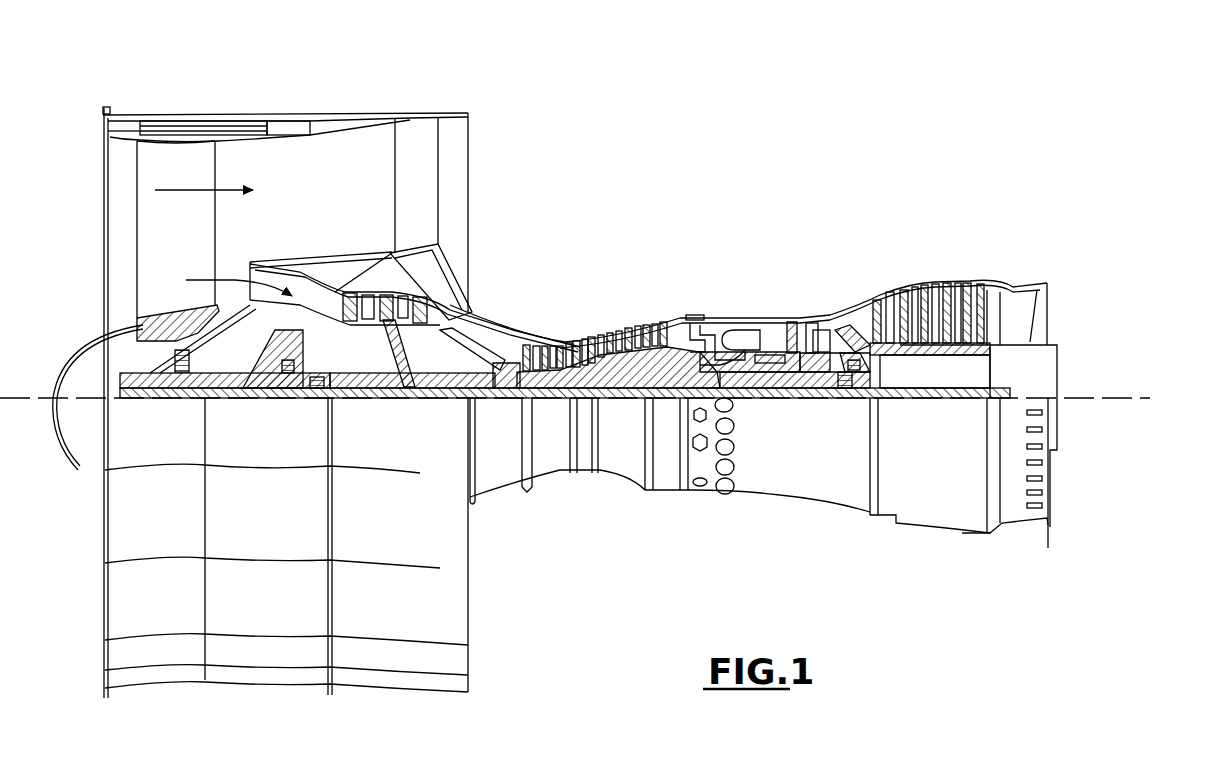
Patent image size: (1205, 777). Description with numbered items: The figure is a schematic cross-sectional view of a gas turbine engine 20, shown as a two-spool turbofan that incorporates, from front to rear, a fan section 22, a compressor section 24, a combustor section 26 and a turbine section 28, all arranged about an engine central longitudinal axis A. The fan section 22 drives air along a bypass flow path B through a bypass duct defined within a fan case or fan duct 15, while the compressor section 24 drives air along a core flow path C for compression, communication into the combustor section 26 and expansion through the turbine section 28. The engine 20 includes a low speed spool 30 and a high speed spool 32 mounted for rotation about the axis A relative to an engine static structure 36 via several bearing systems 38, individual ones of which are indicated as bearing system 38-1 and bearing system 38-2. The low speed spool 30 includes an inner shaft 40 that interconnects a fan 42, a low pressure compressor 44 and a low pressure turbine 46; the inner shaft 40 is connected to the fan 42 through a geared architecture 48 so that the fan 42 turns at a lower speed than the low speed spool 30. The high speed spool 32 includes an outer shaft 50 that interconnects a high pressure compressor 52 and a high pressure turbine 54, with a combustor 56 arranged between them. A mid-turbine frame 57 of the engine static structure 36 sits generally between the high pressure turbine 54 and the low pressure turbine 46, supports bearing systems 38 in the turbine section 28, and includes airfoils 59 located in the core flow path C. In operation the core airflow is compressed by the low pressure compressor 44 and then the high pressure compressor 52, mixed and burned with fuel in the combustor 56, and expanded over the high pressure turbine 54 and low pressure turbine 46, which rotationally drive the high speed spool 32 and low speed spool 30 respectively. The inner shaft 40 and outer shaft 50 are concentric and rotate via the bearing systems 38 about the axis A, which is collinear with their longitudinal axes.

The gas turbine engine 20 is at (750, 160).
The fan section 22 is at (215, 106).
The fan case or fan duct 15 is at (286, 118).
The fan 42 is at (189, 244).
The compressor section 24 is at (520, 303).
The low pressure compressor 44 is at (395, 303).
The high pressure compressor 52 is at (600, 348).
The high speed spool 32 is at (670, 356).
The combustor section 26 is at (740, 298).
The combustor 56 is at (735, 342).
The high pressure turbine 54 is at (808, 318).
The mid-turbine frame 57 is at (855, 303).
The turbine section 28 is at (892, 258).
The low pressure turbine 46 is at (931, 290).
The airfoils 59 is at (880, 365).
The outer shaft 50 is at (745, 380).
The bearing systems 38 is at (843, 397).
The low speed spool 30 is at (625, 410).
The engine static structure 36 is at (666, 493).
The inner shaft 40 is at (489, 405).
The geared architecture 48 is at (292, 378).
The bearing system 38-1 is at (180, 370).
The bearing system 38-2 is at (317, 390).
The engine central longitudinal axis A is at (1135, 398).
The bypass flow path B is at (190, 189).
The core flow path C is at (229, 281).